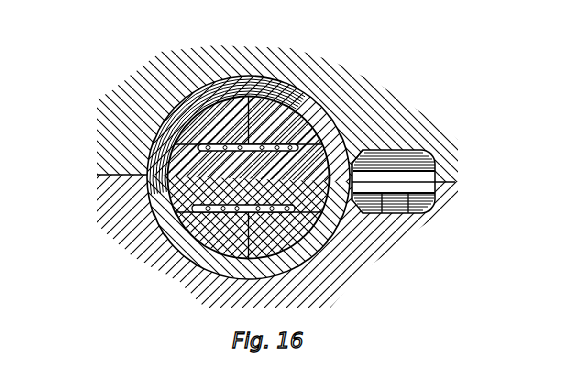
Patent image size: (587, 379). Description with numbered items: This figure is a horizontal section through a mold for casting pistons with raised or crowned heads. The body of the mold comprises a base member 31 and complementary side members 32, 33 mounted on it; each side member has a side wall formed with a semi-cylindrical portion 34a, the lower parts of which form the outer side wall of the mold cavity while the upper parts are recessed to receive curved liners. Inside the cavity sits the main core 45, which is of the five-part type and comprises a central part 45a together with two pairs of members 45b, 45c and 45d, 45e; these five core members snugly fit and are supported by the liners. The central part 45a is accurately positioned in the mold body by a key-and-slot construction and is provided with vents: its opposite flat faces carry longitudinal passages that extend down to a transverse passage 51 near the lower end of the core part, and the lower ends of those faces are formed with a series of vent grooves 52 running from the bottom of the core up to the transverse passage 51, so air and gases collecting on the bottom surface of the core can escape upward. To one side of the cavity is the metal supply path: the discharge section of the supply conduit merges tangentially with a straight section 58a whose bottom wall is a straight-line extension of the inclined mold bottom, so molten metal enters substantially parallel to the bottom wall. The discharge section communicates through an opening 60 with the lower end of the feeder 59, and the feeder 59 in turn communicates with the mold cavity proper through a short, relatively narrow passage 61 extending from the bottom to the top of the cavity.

The base member 31 is at (320, 248).
The side member 32 is at (115, 107).
The side member 33 is at (112, 236).
The semi-cylindrical portion 34a is at (192, 208).
The main core 45 is at (173, 110).
The central part 45a is at (150, 163).
The core member 45b is at (205, 258).
The core member 45c is at (297, 252).
The core member 45d is at (218, 112).
The core member 45e is at (300, 123).
The transverse passage 51 is at (147, 147).
The vent grooves 52 is at (258, 143).
The straight section 58a is at (407, 213).
The feeder 59 is at (403, 152).
The opening 60 is at (378, 213).
The passage 61 is at (357, 157).